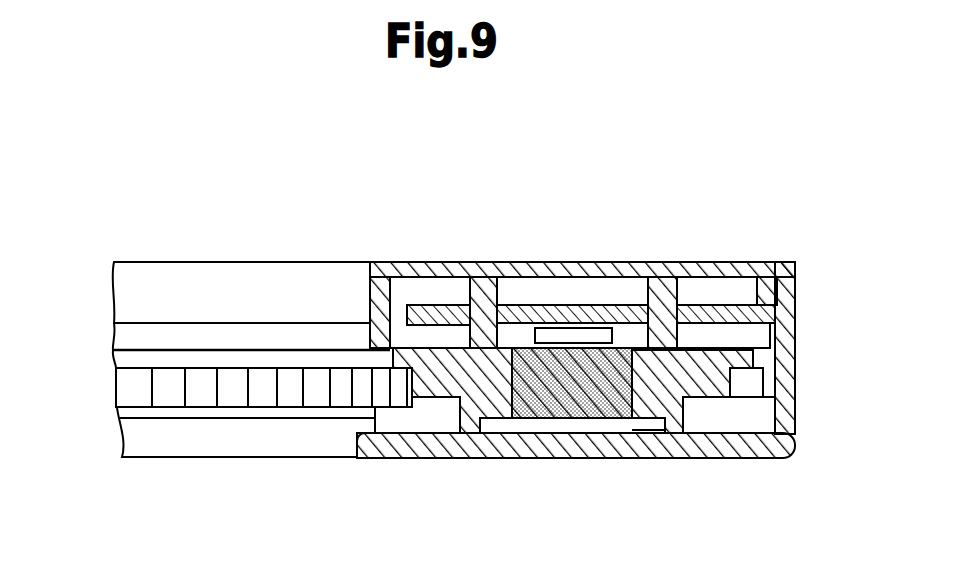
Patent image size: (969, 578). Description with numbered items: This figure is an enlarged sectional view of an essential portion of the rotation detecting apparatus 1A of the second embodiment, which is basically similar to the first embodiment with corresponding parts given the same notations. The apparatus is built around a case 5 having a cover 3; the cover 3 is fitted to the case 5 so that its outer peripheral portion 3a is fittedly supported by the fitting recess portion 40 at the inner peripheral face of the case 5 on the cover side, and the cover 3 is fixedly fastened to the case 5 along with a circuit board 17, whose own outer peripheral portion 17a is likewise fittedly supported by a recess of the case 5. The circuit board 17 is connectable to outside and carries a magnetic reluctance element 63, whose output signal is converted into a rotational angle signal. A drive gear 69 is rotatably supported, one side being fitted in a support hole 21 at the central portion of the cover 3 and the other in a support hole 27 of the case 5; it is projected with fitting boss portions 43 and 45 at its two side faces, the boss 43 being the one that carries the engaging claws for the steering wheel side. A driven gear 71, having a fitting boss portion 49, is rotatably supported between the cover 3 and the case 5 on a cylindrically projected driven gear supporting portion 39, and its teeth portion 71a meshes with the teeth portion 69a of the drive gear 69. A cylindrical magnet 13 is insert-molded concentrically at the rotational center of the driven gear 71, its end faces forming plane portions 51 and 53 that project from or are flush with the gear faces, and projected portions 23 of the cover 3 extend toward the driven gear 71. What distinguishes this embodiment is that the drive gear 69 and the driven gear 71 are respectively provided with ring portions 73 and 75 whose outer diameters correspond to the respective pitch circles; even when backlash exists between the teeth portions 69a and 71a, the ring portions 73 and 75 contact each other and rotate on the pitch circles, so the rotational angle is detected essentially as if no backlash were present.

The rotation detecting apparatus 1A is at (368, 178).
The cover 3 is at (615, 356).
The outer peripheral portion of the cover 3a is at (797, 290).
The case 5 is at (716, 463).
The magnet 13 is at (556, 422).
The circuit board 17 is at (722, 299).
The outer peripheral portion of the circuit board 17a is at (783, 328).
The support hole 21 is at (368, 290).
The projected portions 23 is at (629, 346).
The support hole 27 is at (342, 434).
The driven gear supporting portion 39 is at (432, 421).
The fitting recess portion 40 is at (782, 264).
The fitting boss portion 43 is at (190, 318).
The fitting boss portion 45 is at (166, 459).
The fitting boss portion 49 is at (498, 419).
The plane portion 51 is at (600, 316).
The plane portion 53 is at (630, 406).
The magnetic reluctance element 63 is at (548, 328).
The drive gear 69 is at (112, 338).
The teeth portion of the drive gear 69a is at (250, 392).
The driven gear 71 is at (704, 404).
The teeth portion of the driven gear 71a is at (750, 382).
The ring portion 73 is at (108, 369).
The ring portion 75 is at (754, 351).